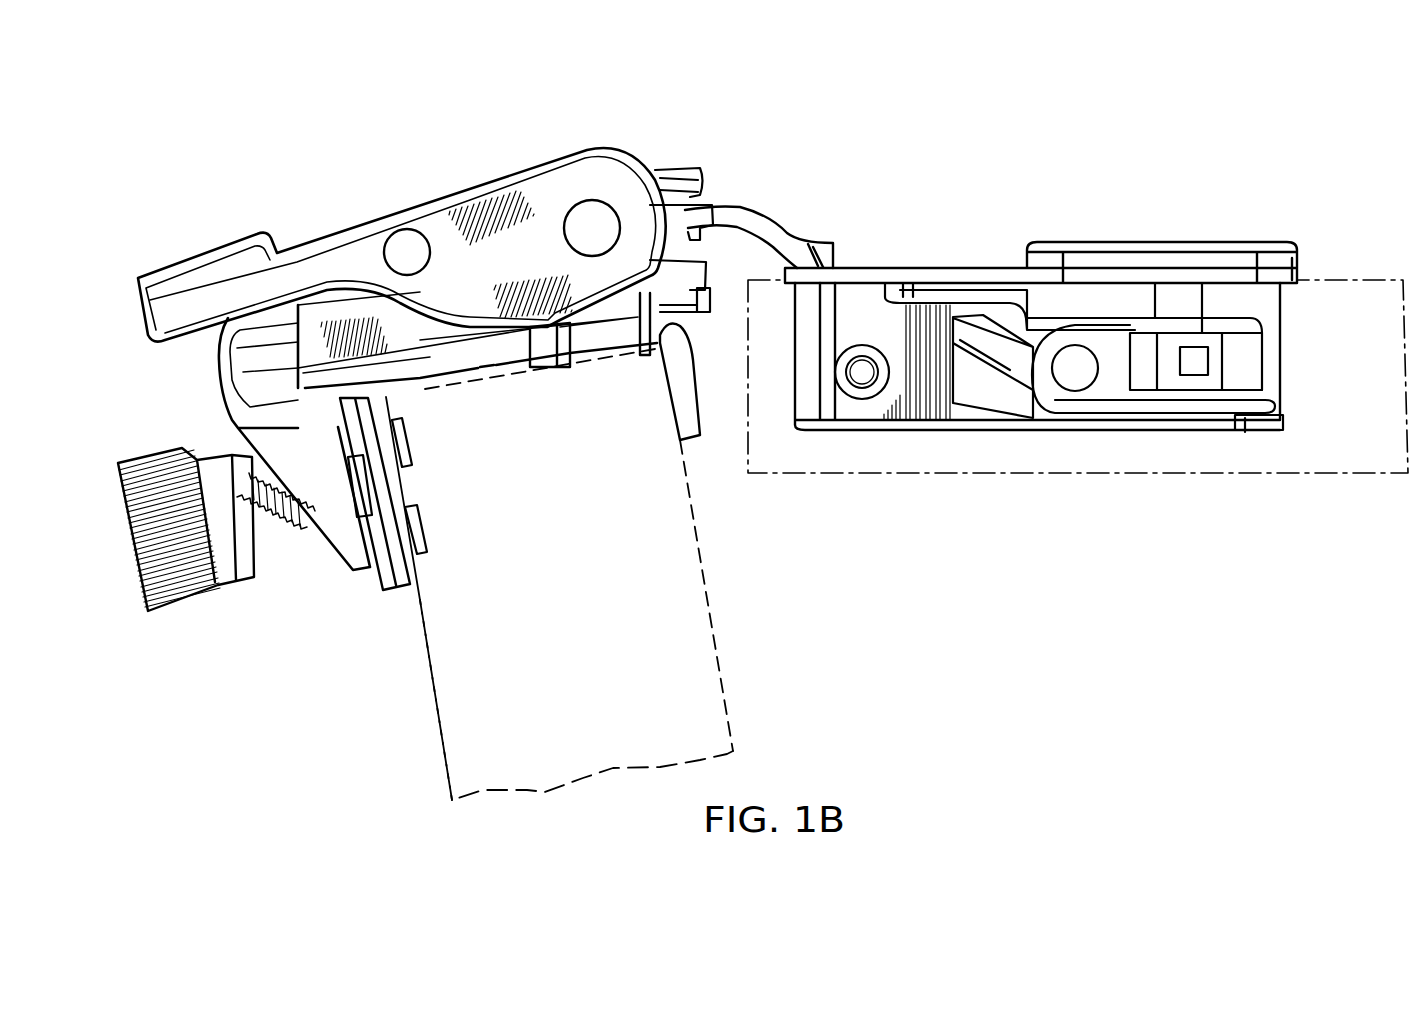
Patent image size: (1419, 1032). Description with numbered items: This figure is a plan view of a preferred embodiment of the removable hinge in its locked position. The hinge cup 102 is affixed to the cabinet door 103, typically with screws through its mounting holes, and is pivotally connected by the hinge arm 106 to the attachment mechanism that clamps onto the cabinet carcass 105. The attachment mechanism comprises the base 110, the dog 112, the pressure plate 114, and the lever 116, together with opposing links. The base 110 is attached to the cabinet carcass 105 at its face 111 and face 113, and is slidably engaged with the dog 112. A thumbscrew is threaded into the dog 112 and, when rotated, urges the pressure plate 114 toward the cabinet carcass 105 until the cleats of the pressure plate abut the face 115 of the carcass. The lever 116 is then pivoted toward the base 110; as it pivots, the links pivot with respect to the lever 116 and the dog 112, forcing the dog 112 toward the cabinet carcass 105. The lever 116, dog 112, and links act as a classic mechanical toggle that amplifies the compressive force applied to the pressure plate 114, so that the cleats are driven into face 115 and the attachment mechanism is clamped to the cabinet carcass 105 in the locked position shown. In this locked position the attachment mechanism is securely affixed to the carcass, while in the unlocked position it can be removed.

The hinge cup 102 is at (1160, 243).
The cabinet door 103 is at (1212, 471).
The cabinet carcass 105 is at (698, 550).
The hinge arm 106 is at (735, 207).
The base 110 is at (527, 352).
The face 111 is at (478, 363).
The dog 112 is at (342, 548).
The face 113 is at (717, 640).
The pressure plate 114 is at (400, 588).
The face 115 is at (432, 689).
The lever 116 is at (556, 185).